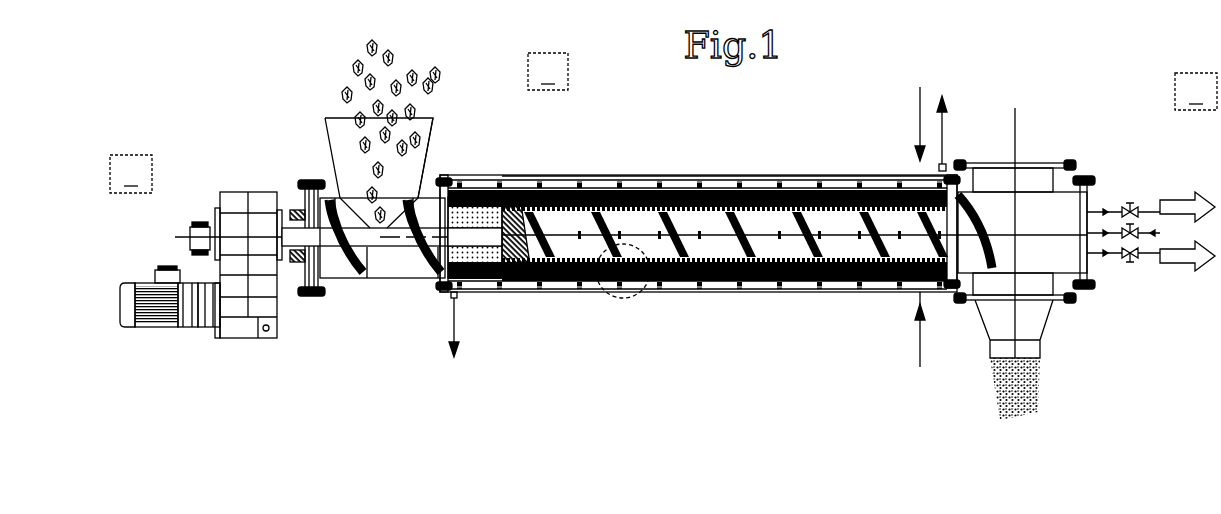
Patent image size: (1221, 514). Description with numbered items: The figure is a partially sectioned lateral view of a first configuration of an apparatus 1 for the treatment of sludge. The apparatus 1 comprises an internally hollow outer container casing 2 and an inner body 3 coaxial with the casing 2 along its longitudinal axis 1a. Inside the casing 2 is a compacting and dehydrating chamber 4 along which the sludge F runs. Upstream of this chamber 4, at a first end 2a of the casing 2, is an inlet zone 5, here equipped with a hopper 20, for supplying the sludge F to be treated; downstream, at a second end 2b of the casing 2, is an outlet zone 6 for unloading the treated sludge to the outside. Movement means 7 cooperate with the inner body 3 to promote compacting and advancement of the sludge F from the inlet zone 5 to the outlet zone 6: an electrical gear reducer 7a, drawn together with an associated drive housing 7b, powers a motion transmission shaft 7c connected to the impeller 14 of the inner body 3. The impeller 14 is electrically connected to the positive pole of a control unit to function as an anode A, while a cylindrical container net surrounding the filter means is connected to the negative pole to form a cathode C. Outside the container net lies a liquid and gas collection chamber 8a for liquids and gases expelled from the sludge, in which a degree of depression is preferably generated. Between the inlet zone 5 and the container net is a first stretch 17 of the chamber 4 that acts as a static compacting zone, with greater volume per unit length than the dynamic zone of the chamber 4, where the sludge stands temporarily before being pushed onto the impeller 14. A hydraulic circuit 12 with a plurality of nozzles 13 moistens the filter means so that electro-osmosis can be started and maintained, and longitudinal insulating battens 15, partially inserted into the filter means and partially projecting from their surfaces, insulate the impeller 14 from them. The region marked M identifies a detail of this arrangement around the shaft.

The apparatus for the treatment of sludge 1 is at (1030, 76).
The longitudinal axis 1a is at (338, 250).
The outer container casing 2 is at (560, 176).
The first end of the outer casing 2a is at (443, 302).
The second end of the outer casing 2b is at (950, 160).
The inner body 3 is at (400, 262).
The compacting and dehydrating chamber 4 is at (637, 193).
The inlet zone 5 is at (440, 106).
The outlet zone 6 is at (1052, 347).
The movement means 7 is at (215, 178).
The electrical gear reducer 7a is at (133, 322).
The gearbox 7b is at (232, 332).
The motion transmission shaft 7c is at (282, 192).
The liquid and gas collection chamber 8a is at (784, 291).
The hydraulic circuit 12 is at (830, 195).
The nozzles 13 is at (544, 292).
The impeller 14 is at (366, 258).
The longitudinal insulating battens 15 is at (752, 195).
The first stretch of compacting and dehydrating chamber 17 is at (482, 280).
The hopper 20 is at (330, 160).
The sludge F is at (343, 94).
The detail region M is at (618, 298).
The anode A is at (200, 222).
The cathode C is at (1175, 108).